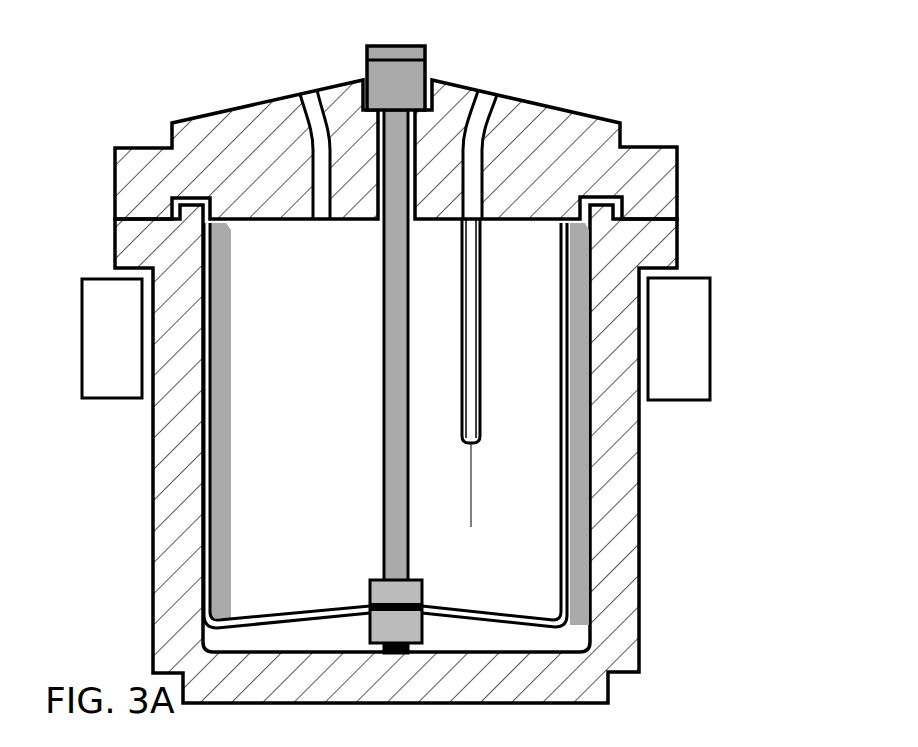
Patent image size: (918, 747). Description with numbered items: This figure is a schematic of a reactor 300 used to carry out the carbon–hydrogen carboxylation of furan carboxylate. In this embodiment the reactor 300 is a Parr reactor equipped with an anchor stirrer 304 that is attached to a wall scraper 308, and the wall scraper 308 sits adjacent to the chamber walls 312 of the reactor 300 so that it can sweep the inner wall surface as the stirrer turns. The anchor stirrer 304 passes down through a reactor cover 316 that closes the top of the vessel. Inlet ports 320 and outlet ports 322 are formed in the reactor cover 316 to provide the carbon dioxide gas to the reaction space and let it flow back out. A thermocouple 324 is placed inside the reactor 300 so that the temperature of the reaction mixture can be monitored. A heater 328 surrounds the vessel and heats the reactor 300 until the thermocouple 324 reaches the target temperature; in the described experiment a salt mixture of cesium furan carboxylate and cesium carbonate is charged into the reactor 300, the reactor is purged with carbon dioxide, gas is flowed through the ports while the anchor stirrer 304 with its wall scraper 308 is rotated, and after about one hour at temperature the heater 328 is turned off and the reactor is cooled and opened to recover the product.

The reactor 300 is at (143, 96).
The anchor stirrer 304 is at (413, 76).
The wall scraper 308 is at (580, 491).
The chamber walls 312 is at (627, 563).
The reactor cover 316 is at (396, 134).
The inlet ports 320 is at (484, 93).
The outlet ports 322 is at (306, 93).
The thermocouple 324 is at (471, 492).
The heater 328 is at (690, 297).